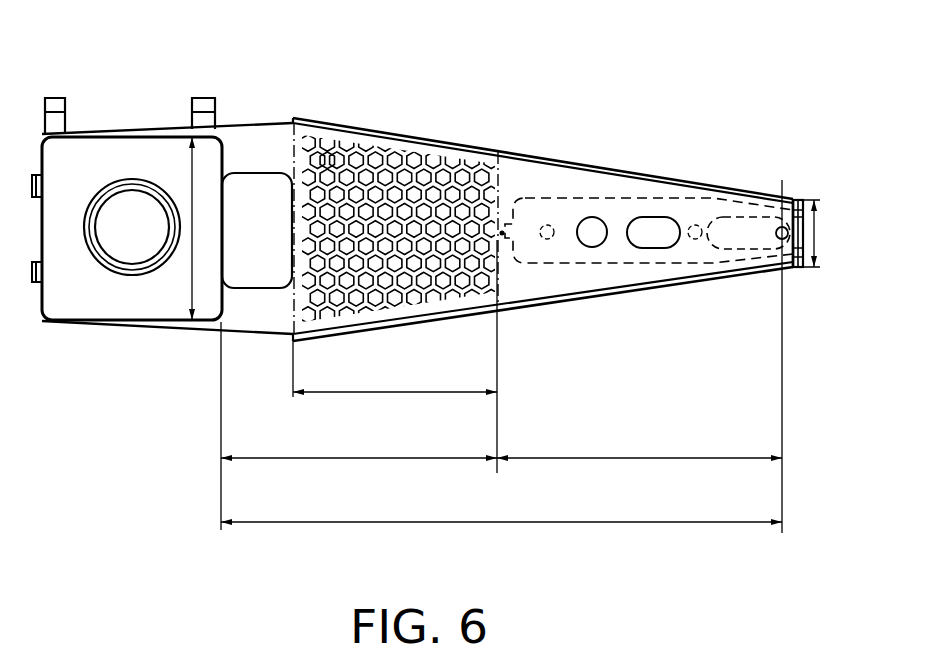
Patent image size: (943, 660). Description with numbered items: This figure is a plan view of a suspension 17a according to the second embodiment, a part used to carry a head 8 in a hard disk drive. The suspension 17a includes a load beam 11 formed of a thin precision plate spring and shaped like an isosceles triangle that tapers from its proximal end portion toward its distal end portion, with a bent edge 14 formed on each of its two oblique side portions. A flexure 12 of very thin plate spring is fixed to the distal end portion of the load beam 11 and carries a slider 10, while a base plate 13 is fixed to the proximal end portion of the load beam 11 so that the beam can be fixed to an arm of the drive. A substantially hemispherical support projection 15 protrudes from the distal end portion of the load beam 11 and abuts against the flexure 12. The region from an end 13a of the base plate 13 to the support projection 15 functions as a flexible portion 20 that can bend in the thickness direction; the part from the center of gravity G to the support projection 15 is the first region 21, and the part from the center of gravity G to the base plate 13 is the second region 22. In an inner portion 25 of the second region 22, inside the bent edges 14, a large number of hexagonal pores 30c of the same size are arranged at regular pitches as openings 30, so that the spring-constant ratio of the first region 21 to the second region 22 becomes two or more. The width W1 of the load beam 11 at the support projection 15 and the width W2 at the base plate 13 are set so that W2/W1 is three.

The head 8 is at (800, 268).
The slider 10 is at (768, 218).
The load beam 11 is at (557, 292).
The flexure 12 is at (660, 198).
The base plate 13 is at (125, 312).
The end of the base plate 13a is at (229, 160).
The bent edge 14 is at (597, 163).
The support projection 15 is at (779, 239).
The suspension 17a is at (274, 80).
The flexible portion 20 is at (501, 538).
The first region 21 is at (639, 474).
The second region 22 is at (359, 473).
The inner portion 25 is at (384, 411).
The openings 30 is at (470, 163).
The hexagonal pores 30c is at (402, 200).
The center of gravity G is at (503, 232).
The width of the beam at the support projection W1 is at (815, 233).
The width of the proximal end portion of the beam W2 is at (192, 178).